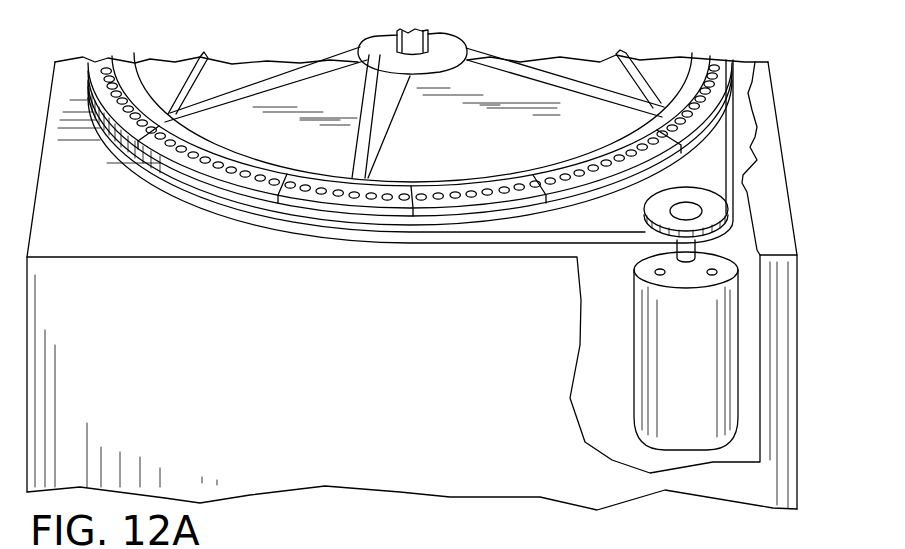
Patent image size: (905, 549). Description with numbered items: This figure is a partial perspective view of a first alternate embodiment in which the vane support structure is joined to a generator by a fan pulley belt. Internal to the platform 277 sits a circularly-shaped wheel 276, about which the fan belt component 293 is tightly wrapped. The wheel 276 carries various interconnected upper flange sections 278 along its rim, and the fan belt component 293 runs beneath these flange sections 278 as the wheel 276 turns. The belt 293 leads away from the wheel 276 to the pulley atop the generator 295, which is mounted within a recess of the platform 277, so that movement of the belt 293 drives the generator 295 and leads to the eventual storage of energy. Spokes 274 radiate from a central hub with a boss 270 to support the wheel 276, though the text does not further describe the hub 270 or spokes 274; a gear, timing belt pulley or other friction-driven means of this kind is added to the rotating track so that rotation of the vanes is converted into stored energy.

The hub boss / shaft 270 is at (418, 42).
The spokes 274 is at (362, 96).
The circularly-shaped wheel 276 is at (216, 141).
The platform 277 is at (391, 392).
The interconnected upper flange sections 278 is at (577, 180).
The fan belt component 293 is at (733, 147).
The generator 295 is at (695, 193).